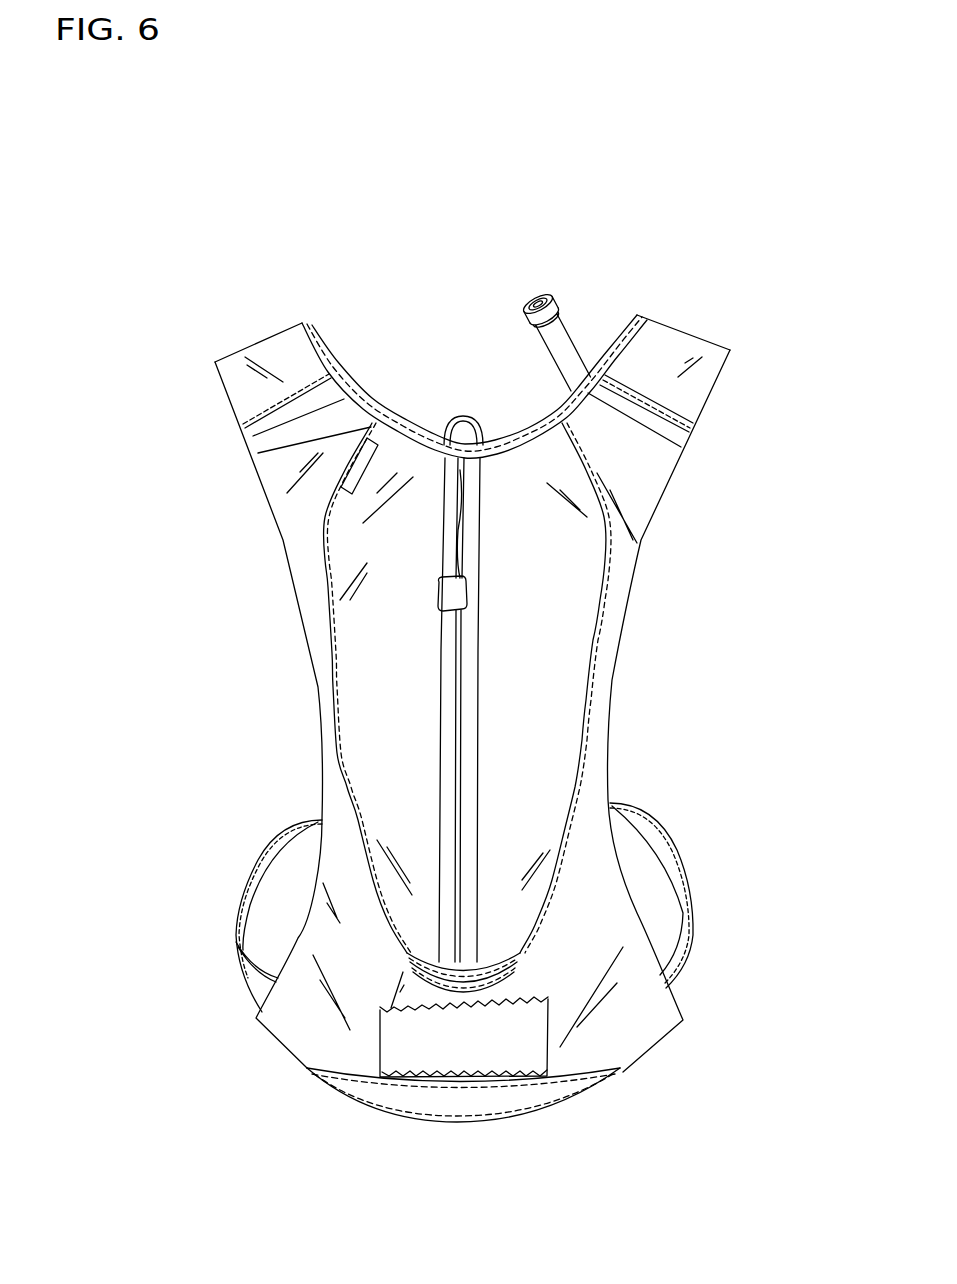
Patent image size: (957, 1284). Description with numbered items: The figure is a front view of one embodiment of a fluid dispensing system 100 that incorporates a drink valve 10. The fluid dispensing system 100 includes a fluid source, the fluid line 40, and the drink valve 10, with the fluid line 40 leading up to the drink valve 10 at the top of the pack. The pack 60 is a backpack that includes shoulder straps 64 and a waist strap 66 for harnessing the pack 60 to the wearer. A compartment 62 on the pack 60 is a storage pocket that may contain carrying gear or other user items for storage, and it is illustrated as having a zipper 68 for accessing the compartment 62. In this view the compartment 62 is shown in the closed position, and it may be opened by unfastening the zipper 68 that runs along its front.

The fluid dispensing system 100 is at (132, 418).
The drink valve 10 is at (567, 292).
The fluid line 40 is at (552, 349).
The pack 60 is at (233, 628).
The compartment 62 is at (360, 685).
The shoulder straps 64 is at (250, 430).
The waist strap 66 is at (260, 850).
The zipper 68 is at (463, 595).